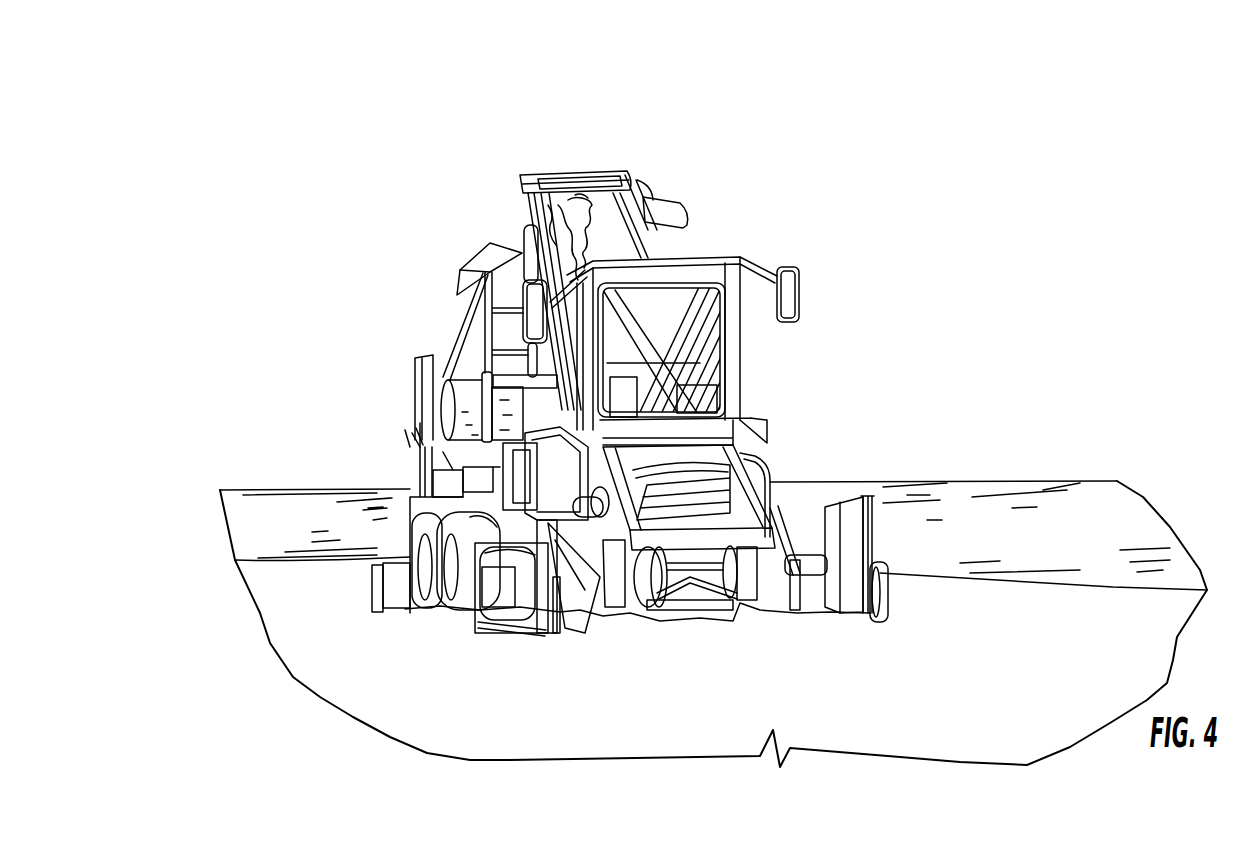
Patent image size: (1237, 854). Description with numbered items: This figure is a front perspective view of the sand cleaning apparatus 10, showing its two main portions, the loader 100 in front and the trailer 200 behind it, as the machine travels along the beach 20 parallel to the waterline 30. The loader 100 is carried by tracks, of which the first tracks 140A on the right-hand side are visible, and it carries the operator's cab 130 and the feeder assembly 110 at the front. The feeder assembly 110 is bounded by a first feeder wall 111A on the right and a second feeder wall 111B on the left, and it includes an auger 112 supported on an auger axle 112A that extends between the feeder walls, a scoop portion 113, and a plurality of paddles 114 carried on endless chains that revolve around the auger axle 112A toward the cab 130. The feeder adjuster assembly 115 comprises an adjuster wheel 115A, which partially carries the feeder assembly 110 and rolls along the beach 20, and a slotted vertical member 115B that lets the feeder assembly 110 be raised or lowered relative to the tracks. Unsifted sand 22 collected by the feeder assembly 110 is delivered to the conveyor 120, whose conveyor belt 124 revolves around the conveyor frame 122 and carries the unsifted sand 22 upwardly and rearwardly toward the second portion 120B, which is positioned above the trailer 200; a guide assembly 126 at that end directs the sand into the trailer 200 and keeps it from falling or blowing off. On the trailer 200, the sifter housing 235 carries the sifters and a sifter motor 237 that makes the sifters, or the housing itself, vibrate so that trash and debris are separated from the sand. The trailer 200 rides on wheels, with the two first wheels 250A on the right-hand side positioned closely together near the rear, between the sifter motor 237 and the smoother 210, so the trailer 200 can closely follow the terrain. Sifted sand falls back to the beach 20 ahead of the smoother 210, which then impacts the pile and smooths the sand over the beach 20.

The sand cleaning apparatus 10 is at (377, 107).
The beach 20 is at (1081, 701).
The unsifted sand 22 is at (580, 203).
The waterline 30 is at (1122, 588).
The loader 100 is at (793, 197).
The feeder assembly 110 is at (656, 630).
The first feeder wall 111A is at (553, 600).
The second feeder wall 111B is at (873, 587).
The auger 112 is at (593, 610).
The auger axle 112A is at (810, 563).
The scoop portion 113 is at (593, 587).
The paddles 114 is at (702, 477).
The feeder adjuster assembly 115 is at (921, 595).
The adjuster wheel 115A is at (887, 597).
The vertical member 115B is at (840, 537).
The conveyor 120 is at (579, 267).
The second portion 120B is at (560, 180).
The conveyor frame 122 is at (582, 200).
The conveyor belt 124 is at (553, 223).
The guide assembly 126 is at (547, 173).
The operator's cab 130 is at (700, 277).
The first tracks 140A is at (493, 617).
The trailer 200 is at (445, 306).
The smoother 210 is at (373, 590).
The sifter housing 235 is at (472, 337).
The sifter motor 237 is at (450, 387).
The first wheels 250A is at (447, 577).